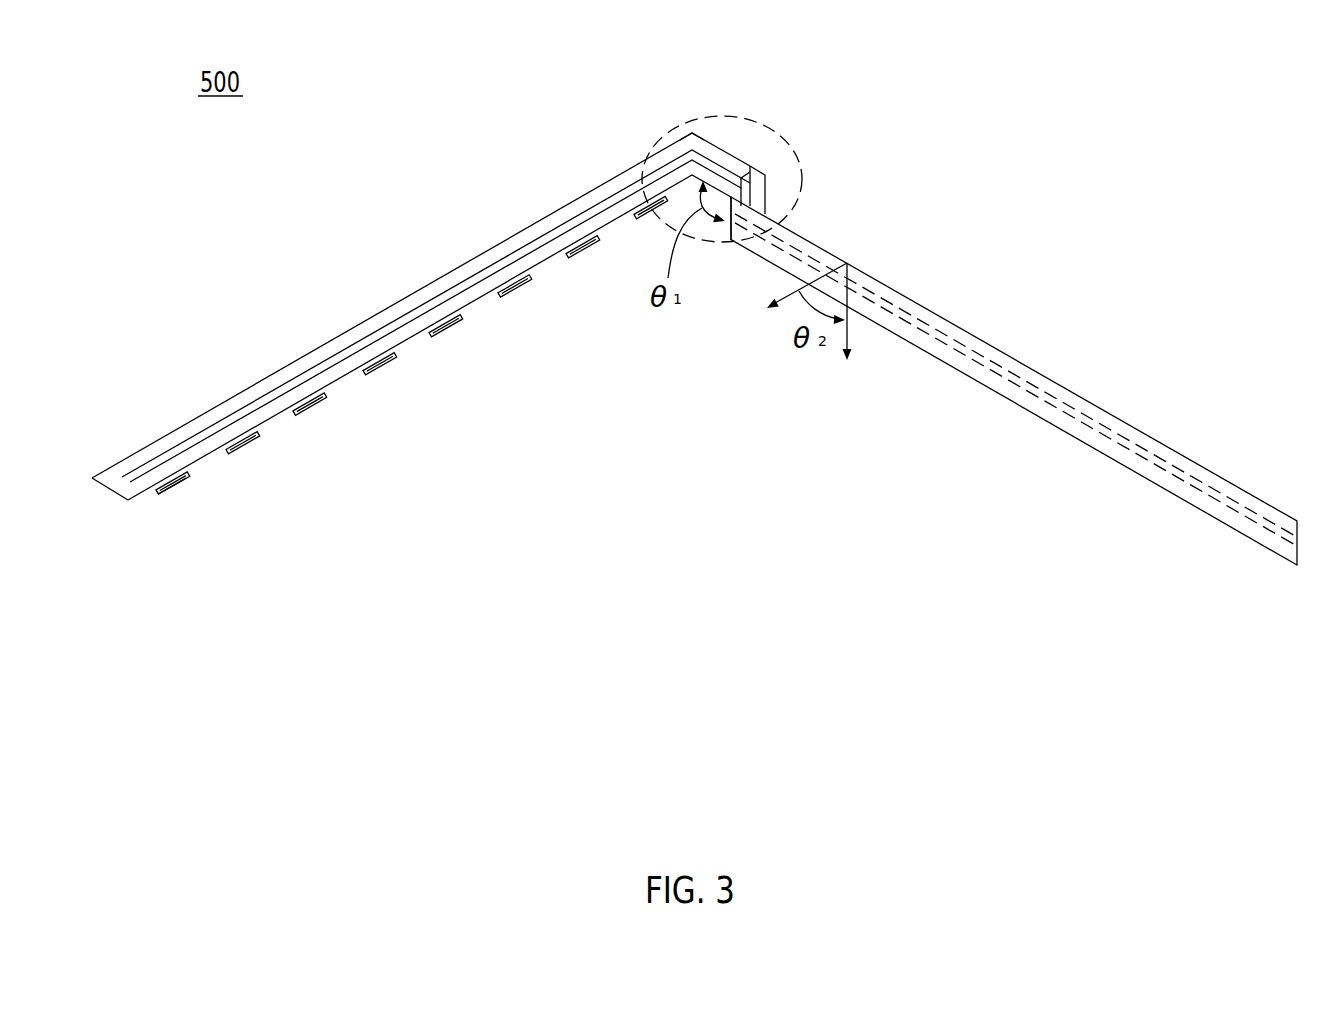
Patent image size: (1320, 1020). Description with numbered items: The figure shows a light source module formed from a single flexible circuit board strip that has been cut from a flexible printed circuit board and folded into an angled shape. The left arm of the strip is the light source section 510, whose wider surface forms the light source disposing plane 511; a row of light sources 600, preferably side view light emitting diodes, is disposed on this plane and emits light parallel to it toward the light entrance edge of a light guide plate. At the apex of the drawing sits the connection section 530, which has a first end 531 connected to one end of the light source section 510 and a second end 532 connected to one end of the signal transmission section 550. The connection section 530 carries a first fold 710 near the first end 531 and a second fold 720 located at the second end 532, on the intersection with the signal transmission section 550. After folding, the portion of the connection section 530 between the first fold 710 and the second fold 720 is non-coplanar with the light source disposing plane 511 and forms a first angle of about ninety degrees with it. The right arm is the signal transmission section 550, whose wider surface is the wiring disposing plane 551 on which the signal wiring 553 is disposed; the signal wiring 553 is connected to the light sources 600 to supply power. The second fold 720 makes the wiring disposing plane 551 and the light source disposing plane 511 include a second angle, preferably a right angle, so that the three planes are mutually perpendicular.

The light source section 510 is at (408, 340).
The light source disposing plane 511 is at (279, 420).
The light source 600 is at (172, 486).
The connection section 530 is at (735, 118).
The first end 531 is at (694, 128).
The second end 532 is at (767, 208).
The first fold 710 is at (752, 166).
The second fold 720 is at (737, 228).
The signal transmission section 550 is at (940, 314).
The wiring disposing plane 551 is at (884, 274).
The signal wiring 553 is at (997, 362).